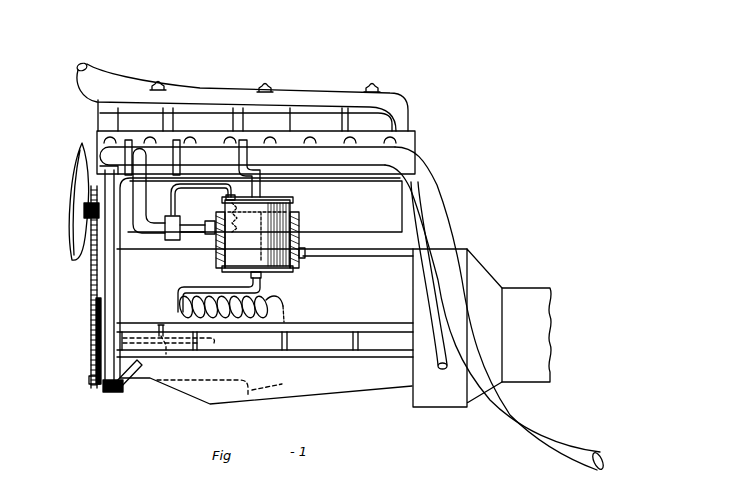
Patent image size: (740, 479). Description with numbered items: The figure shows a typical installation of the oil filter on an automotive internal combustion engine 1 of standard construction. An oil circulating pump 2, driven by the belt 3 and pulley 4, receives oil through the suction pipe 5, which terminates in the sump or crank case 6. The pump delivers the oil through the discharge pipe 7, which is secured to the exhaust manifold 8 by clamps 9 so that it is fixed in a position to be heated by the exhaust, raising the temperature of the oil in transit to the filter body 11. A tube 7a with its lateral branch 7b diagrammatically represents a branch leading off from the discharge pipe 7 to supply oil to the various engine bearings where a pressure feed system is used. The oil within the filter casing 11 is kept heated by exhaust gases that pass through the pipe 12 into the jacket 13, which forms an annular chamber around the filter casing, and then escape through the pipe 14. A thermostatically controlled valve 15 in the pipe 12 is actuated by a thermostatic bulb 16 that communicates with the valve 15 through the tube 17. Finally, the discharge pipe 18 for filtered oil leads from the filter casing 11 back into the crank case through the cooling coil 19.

The automotive engine 1 is at (371, 210).
The oil circulating pump 2 is at (109, 384).
The belt 3 is at (100, 355).
The pulley 4 is at (89, 380).
The suction pipe 5 is at (225, 385).
The crank case 6 is at (297, 398).
The discharge pipe 7 is at (117, 270).
The branch tube 7a is at (176, 344).
The lateral branch 7b is at (159, 328).
The exhaust manifold 8 is at (350, 164).
The clamps 9 is at (224, 155).
The filter body 11 is at (254, 253).
The pipe 12 is at (140, 218).
The jacket 13 is at (216, 253).
The pipe 14 is at (412, 298).
The thermostatically controlled valve 15 is at (177, 234).
The thermostatic bulb 16 is at (231, 208).
The tube 17 is at (171, 192).
The discharge pipe for filtered oil 18 is at (263, 288).
The cooling coil 19 is at (286, 309).